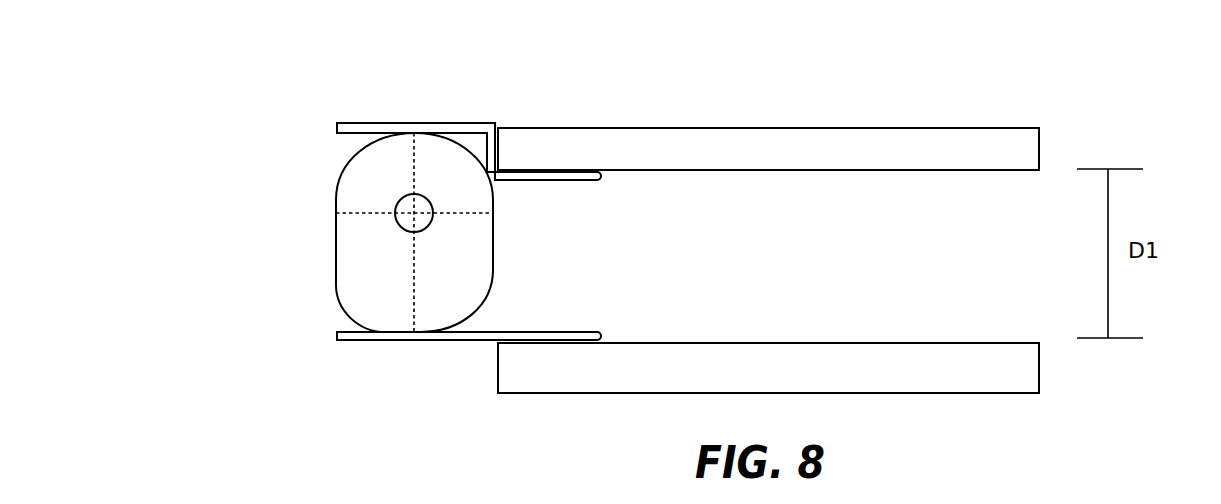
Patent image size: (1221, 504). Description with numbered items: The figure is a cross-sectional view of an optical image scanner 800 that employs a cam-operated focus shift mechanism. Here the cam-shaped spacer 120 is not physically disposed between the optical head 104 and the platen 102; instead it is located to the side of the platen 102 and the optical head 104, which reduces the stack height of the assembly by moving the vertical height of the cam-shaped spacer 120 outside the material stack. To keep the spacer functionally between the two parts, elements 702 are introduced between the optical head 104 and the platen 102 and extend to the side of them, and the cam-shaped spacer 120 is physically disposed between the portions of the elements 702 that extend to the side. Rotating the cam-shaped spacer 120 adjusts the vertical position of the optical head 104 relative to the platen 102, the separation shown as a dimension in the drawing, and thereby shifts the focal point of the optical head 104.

The platen 102 is at (863, 128).
The optical head 104 is at (881, 343).
The cam-shaped spacer 120 is at (287, 224).
The elements 702 is at (589, 210).
The optical image scanner 800 is at (1114, 102).